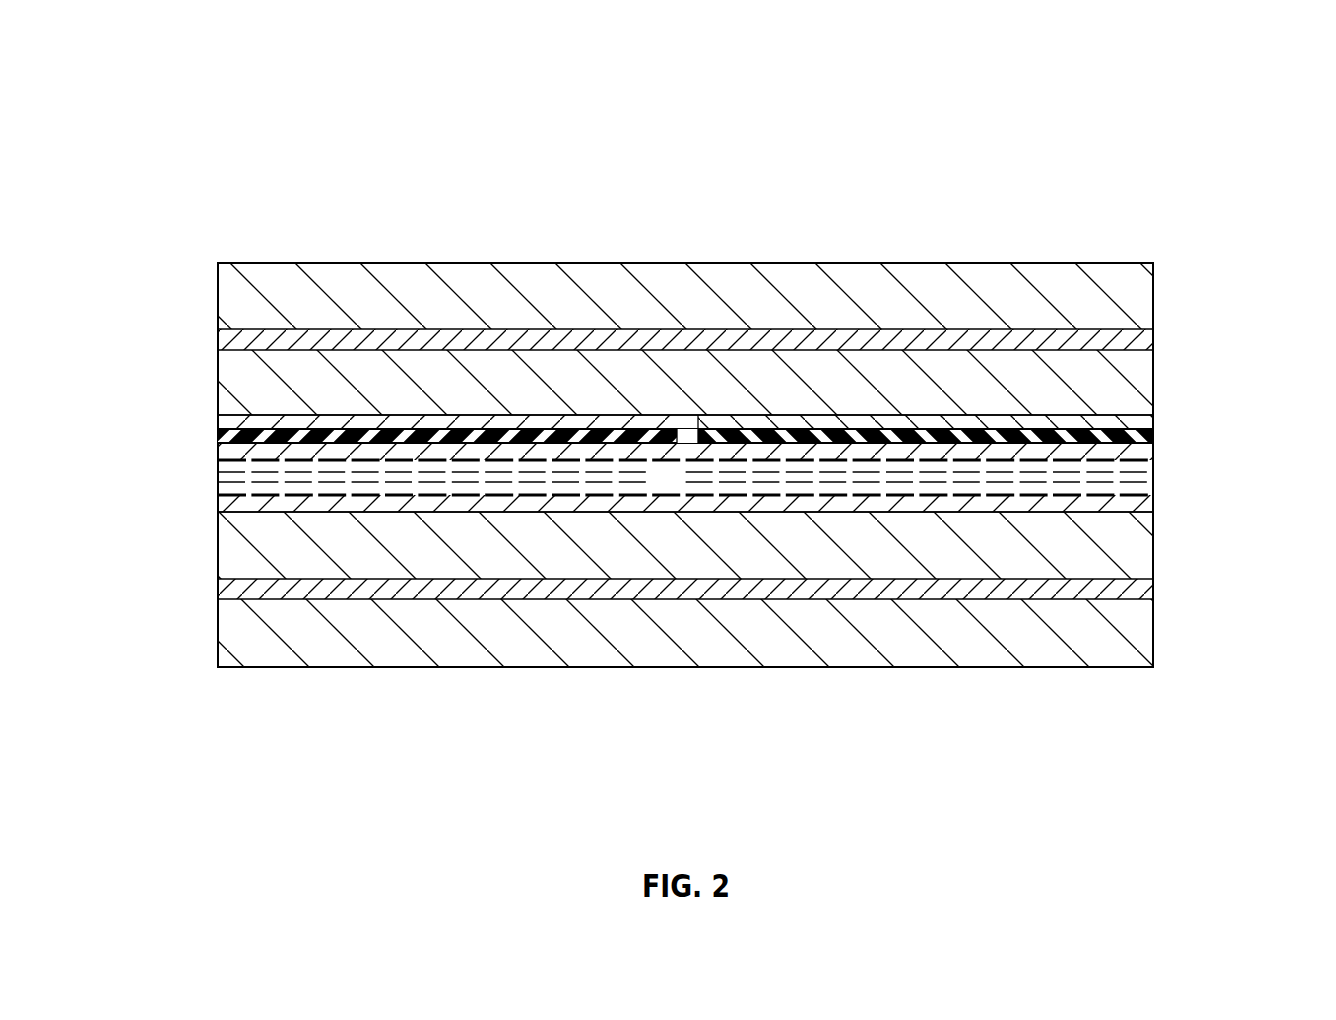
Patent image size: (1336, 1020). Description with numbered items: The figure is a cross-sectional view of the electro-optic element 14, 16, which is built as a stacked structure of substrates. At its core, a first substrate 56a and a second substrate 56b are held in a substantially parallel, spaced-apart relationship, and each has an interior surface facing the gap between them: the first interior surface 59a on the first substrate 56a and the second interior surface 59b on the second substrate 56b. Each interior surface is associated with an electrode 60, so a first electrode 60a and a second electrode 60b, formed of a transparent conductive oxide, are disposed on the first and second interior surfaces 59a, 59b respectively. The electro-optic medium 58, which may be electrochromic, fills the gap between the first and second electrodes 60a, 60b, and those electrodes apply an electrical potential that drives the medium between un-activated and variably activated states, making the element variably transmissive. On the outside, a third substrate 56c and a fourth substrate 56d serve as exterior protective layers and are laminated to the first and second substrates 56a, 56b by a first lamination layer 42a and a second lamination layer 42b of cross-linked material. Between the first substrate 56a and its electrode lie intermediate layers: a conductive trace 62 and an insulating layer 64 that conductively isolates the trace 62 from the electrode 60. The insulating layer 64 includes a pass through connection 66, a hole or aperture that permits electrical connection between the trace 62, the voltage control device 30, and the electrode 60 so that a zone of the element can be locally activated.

The electro-optic element 14 is at (655, 358).
The second laminate assembly 16 is at (283, 97).
The voltage control device 30 is at (703, 422).
The first lamination layer 42a is at (228, 340).
The second lamination layer 42b is at (230, 589).
The first substrate 56a is at (228, 382).
The second substrate 56b is at (230, 540).
The third substrate 56c is at (228, 286).
The fourth substrate 56d is at (230, 640).
The electro-optic medium 58 is at (679, 488).
The first interior surface 59a is at (338, 420).
The second interior surface 59b is at (365, 512).
The electrode 60 is at (745, 487).
The first electrode 60a is at (1153, 450).
The second electrode 60b is at (1153, 503).
The trace 62 is at (1153, 424).
The insulating layer 64 is at (1153, 438).
The pass through connection 66 is at (688, 440).